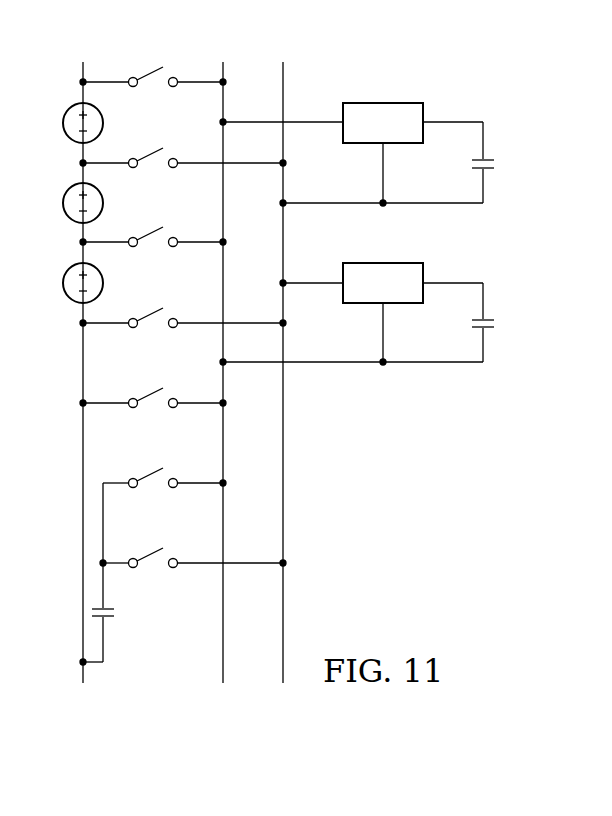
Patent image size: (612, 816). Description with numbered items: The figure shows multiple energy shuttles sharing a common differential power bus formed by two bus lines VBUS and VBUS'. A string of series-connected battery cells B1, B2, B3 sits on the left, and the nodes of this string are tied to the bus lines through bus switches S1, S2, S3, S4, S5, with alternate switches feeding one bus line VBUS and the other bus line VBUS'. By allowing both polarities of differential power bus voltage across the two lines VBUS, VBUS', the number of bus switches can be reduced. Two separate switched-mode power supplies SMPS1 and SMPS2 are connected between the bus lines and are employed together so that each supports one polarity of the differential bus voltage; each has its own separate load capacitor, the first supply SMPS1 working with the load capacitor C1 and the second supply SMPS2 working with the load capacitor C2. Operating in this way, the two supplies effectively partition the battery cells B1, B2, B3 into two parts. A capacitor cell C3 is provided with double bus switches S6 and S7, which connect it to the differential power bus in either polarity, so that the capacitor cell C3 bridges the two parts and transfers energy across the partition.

The battery cell B1 is at (69, 123).
The battery cell B2 is at (69, 203).
The battery cell B3 is at (69, 283).
The bus switch S1 is at (153, 93).
The bus switch S2 is at (183, 174).
The bus switch S3 is at (153, 253).
The bus switch S4 is at (183, 334).
The bus switch S5 is at (153, 414).
The bus switch S6 is at (164, 494).
The bus switch S7 is at (193, 574).
The load capacitor C1 is at (471, 162).
The load capacitor C2 is at (471, 322).
The capacitor cell C3 is at (110, 574).
The switched-mode power supply SMPS1 is at (351, 154).
The switched-mode power supply SMPS2 is at (351, 314).
The differential power bus line VBUS is at (216, 357).
The differential power bus line VBUS' is at (275, 357).